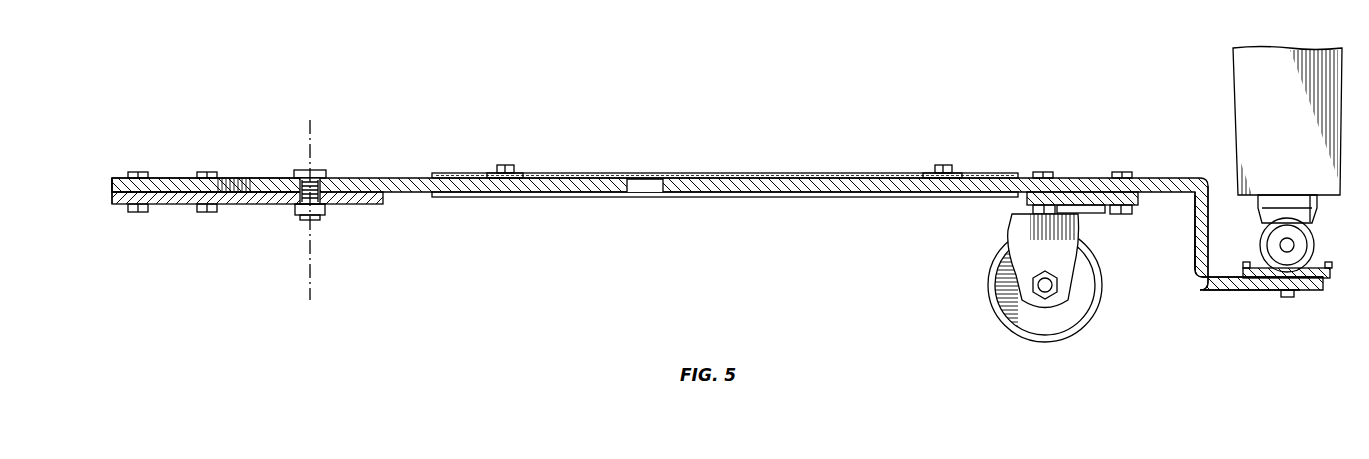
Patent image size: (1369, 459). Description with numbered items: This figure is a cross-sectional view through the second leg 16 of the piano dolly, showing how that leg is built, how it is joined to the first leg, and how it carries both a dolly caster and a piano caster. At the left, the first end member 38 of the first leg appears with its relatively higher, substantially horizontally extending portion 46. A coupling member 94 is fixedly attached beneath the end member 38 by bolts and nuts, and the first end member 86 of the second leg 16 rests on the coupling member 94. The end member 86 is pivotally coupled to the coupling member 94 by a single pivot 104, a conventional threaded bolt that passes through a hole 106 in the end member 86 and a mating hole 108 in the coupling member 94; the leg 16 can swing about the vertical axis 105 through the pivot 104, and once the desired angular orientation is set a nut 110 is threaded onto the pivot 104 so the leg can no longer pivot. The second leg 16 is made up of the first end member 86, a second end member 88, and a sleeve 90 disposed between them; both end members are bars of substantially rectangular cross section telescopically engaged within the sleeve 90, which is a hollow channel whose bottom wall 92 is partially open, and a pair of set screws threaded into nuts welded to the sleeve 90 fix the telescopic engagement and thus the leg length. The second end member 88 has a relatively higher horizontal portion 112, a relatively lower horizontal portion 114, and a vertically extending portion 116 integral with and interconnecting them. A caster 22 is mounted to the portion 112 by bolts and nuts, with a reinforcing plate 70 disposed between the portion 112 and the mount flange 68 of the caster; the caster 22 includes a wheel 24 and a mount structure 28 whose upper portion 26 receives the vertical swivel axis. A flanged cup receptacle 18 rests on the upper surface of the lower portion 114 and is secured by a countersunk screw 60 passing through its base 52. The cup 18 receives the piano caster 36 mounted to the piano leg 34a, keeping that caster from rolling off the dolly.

The second leg 16 is at (801, 134).
The receptacle 18 is at (1330, 284).
The caster 22 is at (1028, 291).
The wheel 24 is at (1036, 343).
The upper portion 26 is at (1028, 232).
The mount structure 28 is at (1012, 278).
The leg 34a is at (1238, 96).
The caster 36 is at (1308, 262).
The first end member 38 is at (111, 176).
The first, relatively higher, substantially horizontally extending portion 46 is at (170, 184).
The base 52 is at (1260, 292).
The countersunk screw 60 is at (1287, 298).
The flange 68 is at (1093, 192).
The reinforcing plate 70 is at (1072, 205).
The first end member 86 is at (367, 176).
The second end member 88 is at (1162, 176).
The sleeve 90 is at (693, 174).
The bottom wall 92 is at (592, 198).
The coupling member 94 is at (377, 205).
The pivot 104 is at (318, 170).
The vertical axis 105 is at (307, 290).
The hole 106 is at (302, 188).
The mating hole 108 is at (320, 205).
The nut 110 is at (295, 218).
The first, relatively higher, substantially horizontally extending portion 112 is at (1173, 190).
The second, relatively lower, substantially horizontally extending portion 114 is at (1222, 292).
The substantially vertically extending portion 116 is at (1200, 252).